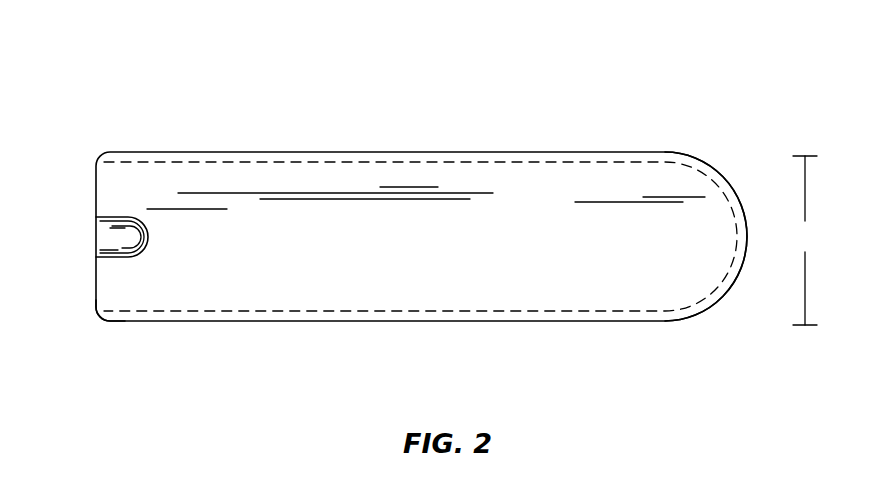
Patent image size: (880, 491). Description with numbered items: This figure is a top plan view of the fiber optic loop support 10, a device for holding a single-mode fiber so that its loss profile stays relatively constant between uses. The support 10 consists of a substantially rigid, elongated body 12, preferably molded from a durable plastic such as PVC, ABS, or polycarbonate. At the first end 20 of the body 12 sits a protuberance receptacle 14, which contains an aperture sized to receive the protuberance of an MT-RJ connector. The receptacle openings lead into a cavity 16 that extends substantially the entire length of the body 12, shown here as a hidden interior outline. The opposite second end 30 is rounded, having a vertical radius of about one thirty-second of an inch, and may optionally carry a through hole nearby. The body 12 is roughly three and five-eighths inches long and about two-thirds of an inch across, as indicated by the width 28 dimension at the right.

The fiber optic loop support 10 is at (497, 66).
The body 12 is at (356, 176).
The protuberance receptacle 14 is at (107, 238).
The cavity 16 is at (614, 184).
The first end 20 is at (98, 336).
The width 28 is at (804, 240).
The second end 30 is at (748, 296).